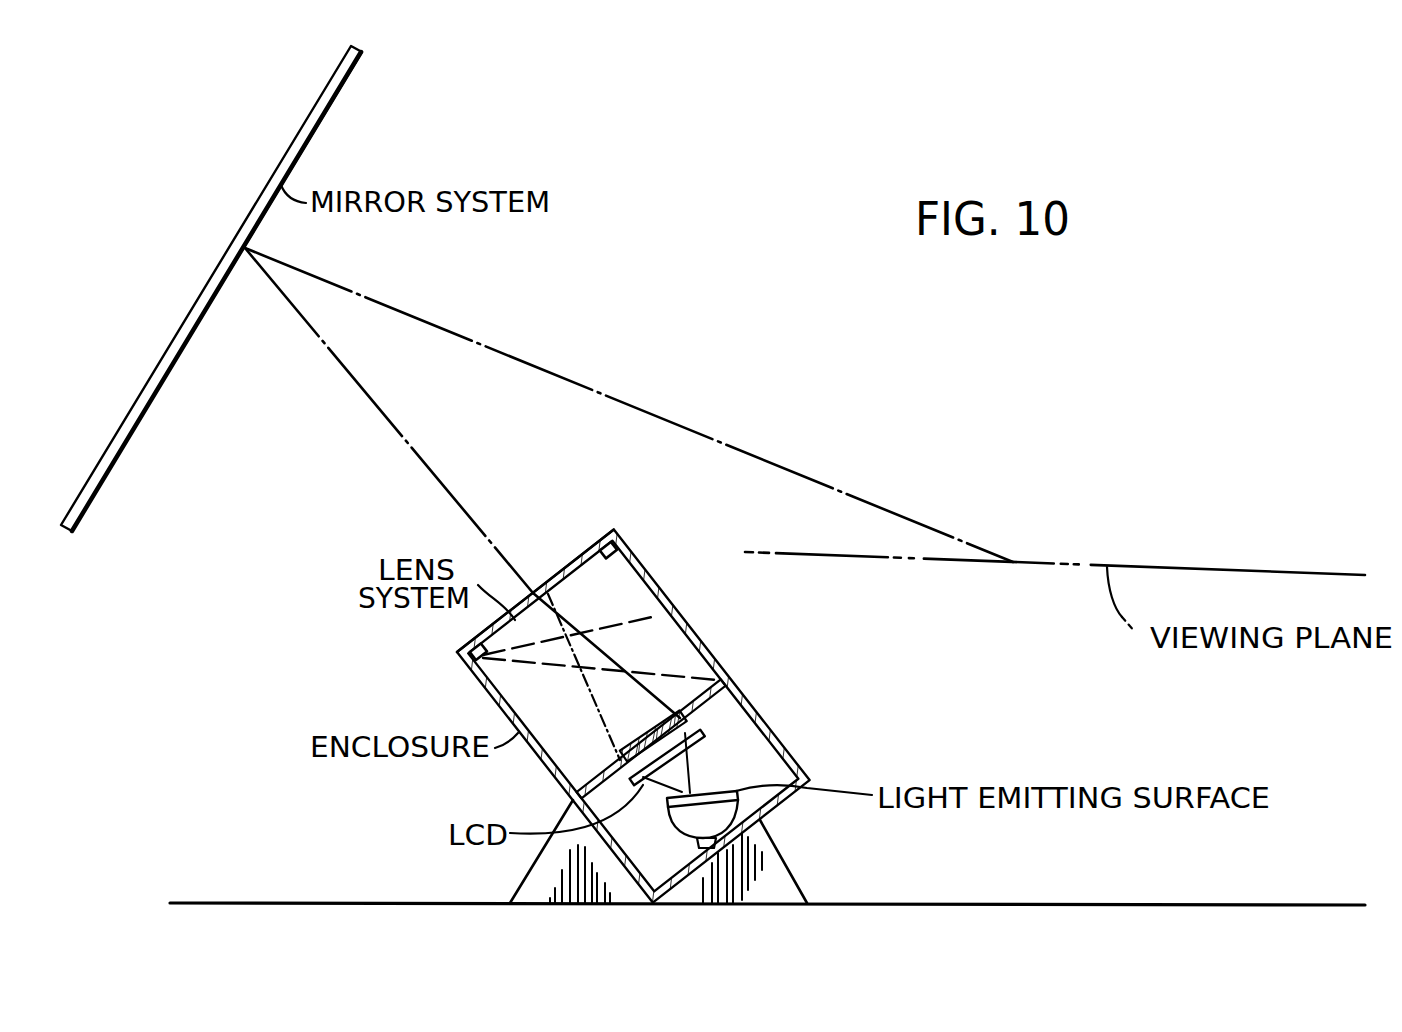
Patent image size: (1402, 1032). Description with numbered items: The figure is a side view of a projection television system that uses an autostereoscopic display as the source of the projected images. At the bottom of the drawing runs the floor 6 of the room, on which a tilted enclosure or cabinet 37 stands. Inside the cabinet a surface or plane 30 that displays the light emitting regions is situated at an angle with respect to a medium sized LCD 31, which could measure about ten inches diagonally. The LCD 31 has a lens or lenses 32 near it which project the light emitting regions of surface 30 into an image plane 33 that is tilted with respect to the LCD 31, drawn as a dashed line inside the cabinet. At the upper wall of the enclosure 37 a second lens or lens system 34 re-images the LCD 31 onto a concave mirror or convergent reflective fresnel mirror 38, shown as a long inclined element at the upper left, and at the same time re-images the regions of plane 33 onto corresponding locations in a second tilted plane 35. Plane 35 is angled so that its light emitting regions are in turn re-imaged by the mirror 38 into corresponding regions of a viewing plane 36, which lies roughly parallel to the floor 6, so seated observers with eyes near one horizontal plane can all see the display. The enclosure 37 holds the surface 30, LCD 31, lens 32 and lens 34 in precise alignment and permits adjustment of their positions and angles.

The floor 6 is at (1140, 903).
The light emitting surface 30 is at (702, 792).
The LCD 31 is at (667, 757).
The lens 32 is at (653, 735).
The image plane 33 is at (585, 632).
The second lens system 34 is at (541, 597).
The plane 35 is at (670, 680).
The viewing plane 36 is at (1135, 567).
The enclosure 37 is at (651, 738).
The mirror 38 is at (338, 96).